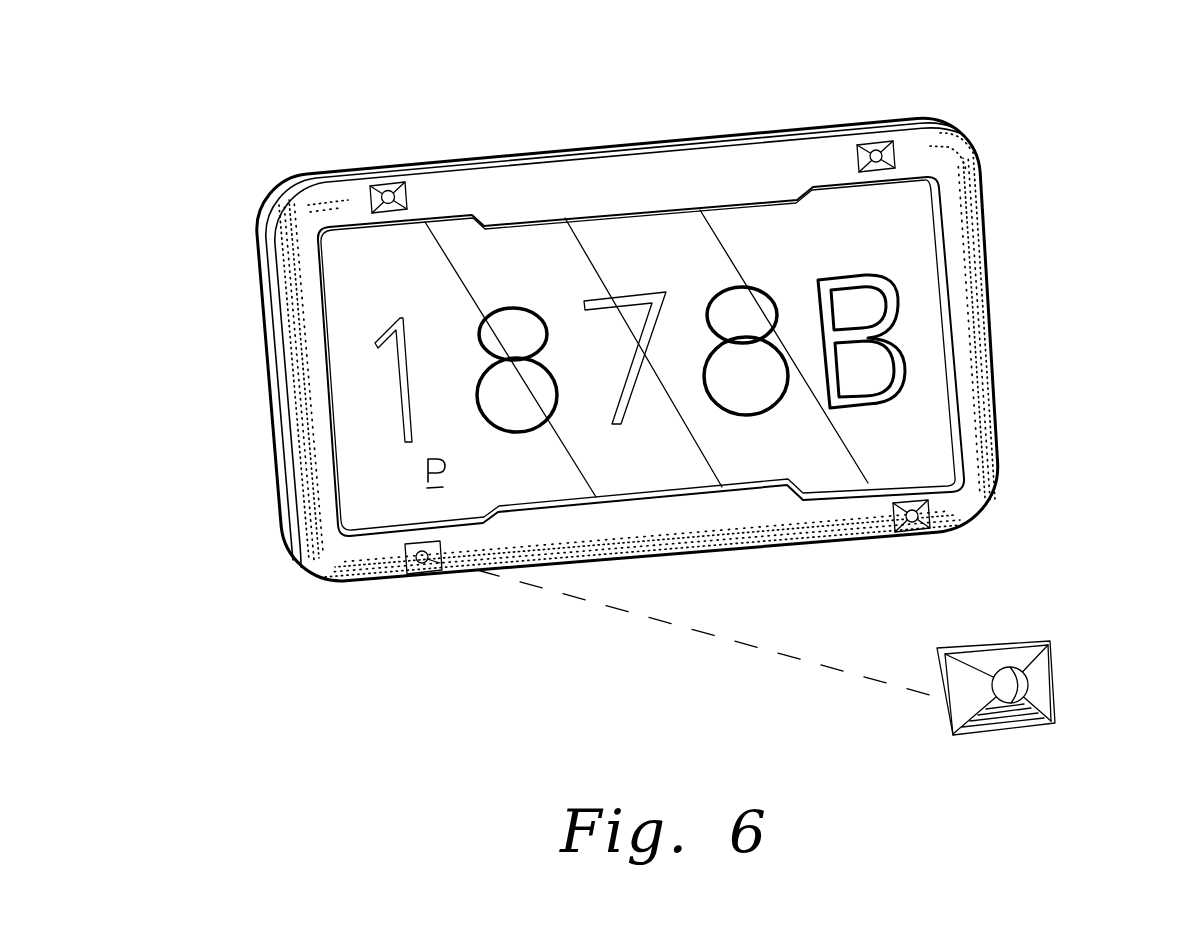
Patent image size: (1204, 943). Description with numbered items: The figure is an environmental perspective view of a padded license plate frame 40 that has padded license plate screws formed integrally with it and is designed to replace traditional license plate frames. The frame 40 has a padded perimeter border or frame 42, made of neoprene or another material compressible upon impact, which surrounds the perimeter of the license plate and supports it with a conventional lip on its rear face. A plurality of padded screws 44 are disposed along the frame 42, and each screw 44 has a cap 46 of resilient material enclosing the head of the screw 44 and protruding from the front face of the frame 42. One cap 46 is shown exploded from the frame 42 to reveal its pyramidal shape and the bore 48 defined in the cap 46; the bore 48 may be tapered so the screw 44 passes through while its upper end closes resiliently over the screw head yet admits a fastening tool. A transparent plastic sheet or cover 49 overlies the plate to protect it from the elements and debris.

The padded license plate frame 40 is at (714, 374).
The padded perimeter border or frame 42 is at (960, 148).
The padded screws 44 is at (719, 376).
The cap 46 is at (719, 383).
The bore 48 is at (1030, 680).
The transparent sheet or cover 49 is at (902, 422).